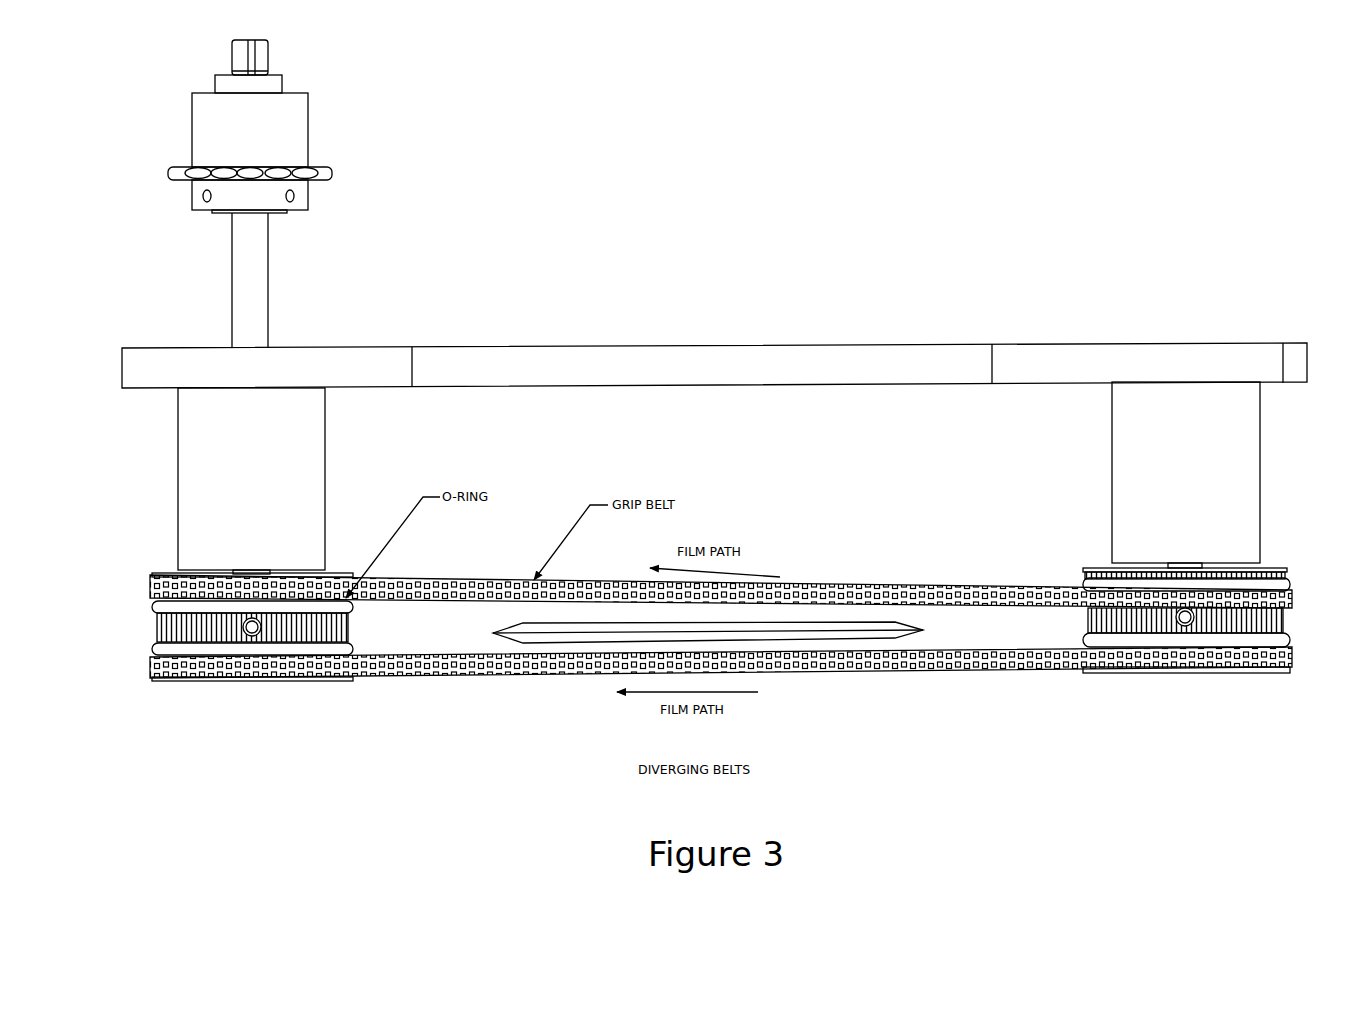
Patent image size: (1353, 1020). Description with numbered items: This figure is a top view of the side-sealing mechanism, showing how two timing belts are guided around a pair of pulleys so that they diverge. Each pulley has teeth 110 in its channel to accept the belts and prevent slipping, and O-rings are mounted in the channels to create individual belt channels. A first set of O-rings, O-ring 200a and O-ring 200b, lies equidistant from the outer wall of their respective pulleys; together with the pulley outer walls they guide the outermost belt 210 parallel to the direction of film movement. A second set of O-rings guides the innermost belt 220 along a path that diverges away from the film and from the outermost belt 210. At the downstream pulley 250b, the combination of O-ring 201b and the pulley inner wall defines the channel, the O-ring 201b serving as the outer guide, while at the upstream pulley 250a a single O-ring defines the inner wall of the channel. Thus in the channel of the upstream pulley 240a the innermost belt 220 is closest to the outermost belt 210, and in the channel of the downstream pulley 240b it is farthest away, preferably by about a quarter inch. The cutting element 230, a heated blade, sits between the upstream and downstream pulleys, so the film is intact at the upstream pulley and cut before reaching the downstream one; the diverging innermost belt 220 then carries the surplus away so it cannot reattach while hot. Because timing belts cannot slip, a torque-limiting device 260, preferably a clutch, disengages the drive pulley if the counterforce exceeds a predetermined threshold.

The torque-limiting device 260 is at (357, 126).
The downstream pulley 250b is at (163, 573).
The upstream pulley 250a is at (1094, 569).
The innermost belt 220 is at (865, 587).
The outermost belt 210 is at (502, 672).
The O-ring 201b is at (152, 605).
The teeth 110 is at (348, 625).
The O-ring 200b is at (152, 647).
The O-ring 200a is at (1288, 638).
The downstream pulley 240b is at (227, 681).
The upstream pulley 240a is at (1220, 673).
The cutting element 230 is at (922, 631).